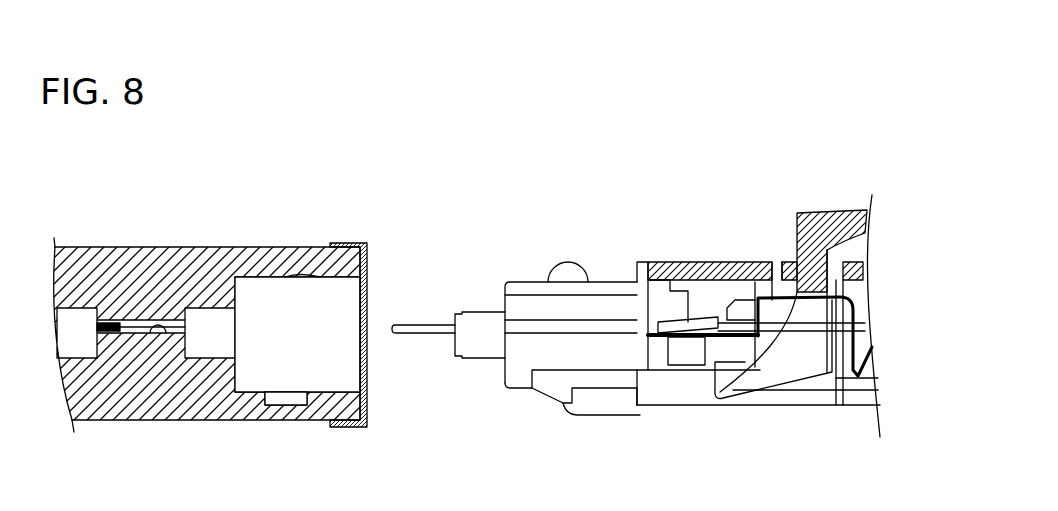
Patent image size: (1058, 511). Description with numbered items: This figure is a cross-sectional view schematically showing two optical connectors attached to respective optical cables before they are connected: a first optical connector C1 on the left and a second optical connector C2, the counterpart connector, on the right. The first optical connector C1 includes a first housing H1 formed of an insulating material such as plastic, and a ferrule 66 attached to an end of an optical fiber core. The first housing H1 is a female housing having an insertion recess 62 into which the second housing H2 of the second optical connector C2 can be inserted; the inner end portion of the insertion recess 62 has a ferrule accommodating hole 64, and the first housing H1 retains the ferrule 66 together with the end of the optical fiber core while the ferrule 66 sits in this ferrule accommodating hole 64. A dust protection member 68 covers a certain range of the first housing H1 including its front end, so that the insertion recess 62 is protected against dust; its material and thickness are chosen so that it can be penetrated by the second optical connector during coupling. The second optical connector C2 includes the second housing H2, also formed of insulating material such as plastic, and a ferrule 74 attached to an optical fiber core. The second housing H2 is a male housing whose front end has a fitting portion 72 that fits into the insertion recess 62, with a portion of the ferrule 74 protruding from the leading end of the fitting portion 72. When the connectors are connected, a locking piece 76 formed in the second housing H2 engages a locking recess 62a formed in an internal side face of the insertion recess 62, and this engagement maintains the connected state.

The first optical connector C1 is at (125, 247).
The first housing H1 is at (207, 266).
The insertion recess 62 is at (297, 298).
The locking recess 62a is at (278, 406).
The ferrule accommodating hole 64 is at (165, 336).
The ferrule 66 is at (109, 332).
The dust protection member 68 is at (368, 360).
The fitting portion 72 is at (640, 437).
The ferrule 74 is at (417, 334).
The locking piece 76 is at (640, 415).
The second housing H2 is at (597, 280).
The second optical connector C2 is at (710, 262).